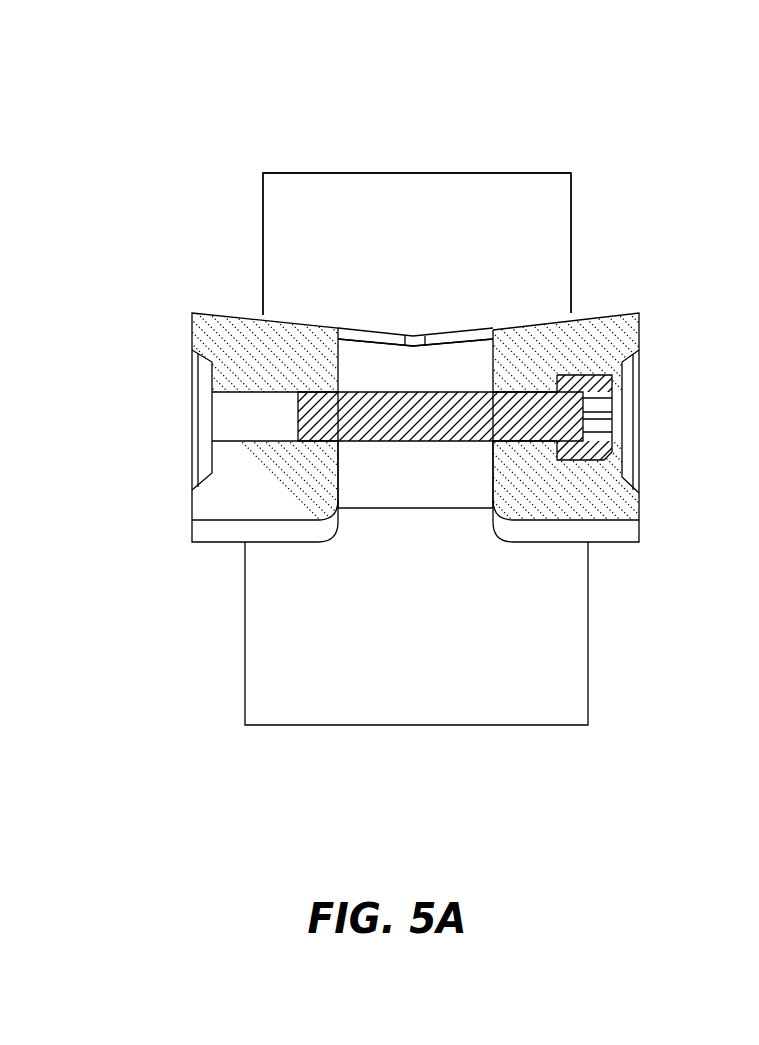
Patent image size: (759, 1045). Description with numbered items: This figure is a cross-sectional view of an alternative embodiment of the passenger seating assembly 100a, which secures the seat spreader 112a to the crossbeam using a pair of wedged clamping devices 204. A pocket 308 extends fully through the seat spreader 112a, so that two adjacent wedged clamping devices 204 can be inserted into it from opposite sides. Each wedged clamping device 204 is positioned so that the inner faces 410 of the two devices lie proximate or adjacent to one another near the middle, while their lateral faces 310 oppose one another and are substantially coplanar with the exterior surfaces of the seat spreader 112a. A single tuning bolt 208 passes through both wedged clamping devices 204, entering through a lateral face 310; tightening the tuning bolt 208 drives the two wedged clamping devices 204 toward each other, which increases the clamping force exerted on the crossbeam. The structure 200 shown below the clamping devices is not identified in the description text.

The passenger seating assembly 100a is at (142, 103).
The seat spreader 112a is at (533, 205).
The wedged clamping device 204 is at (242, 343).
The tuning bolt 208 is at (376, 410).
The pocket 308 is at (432, 380).
The lateral face 310 is at (193, 493).
The inner face 410 is at (492, 453).
The base member 200 is at (408, 692).